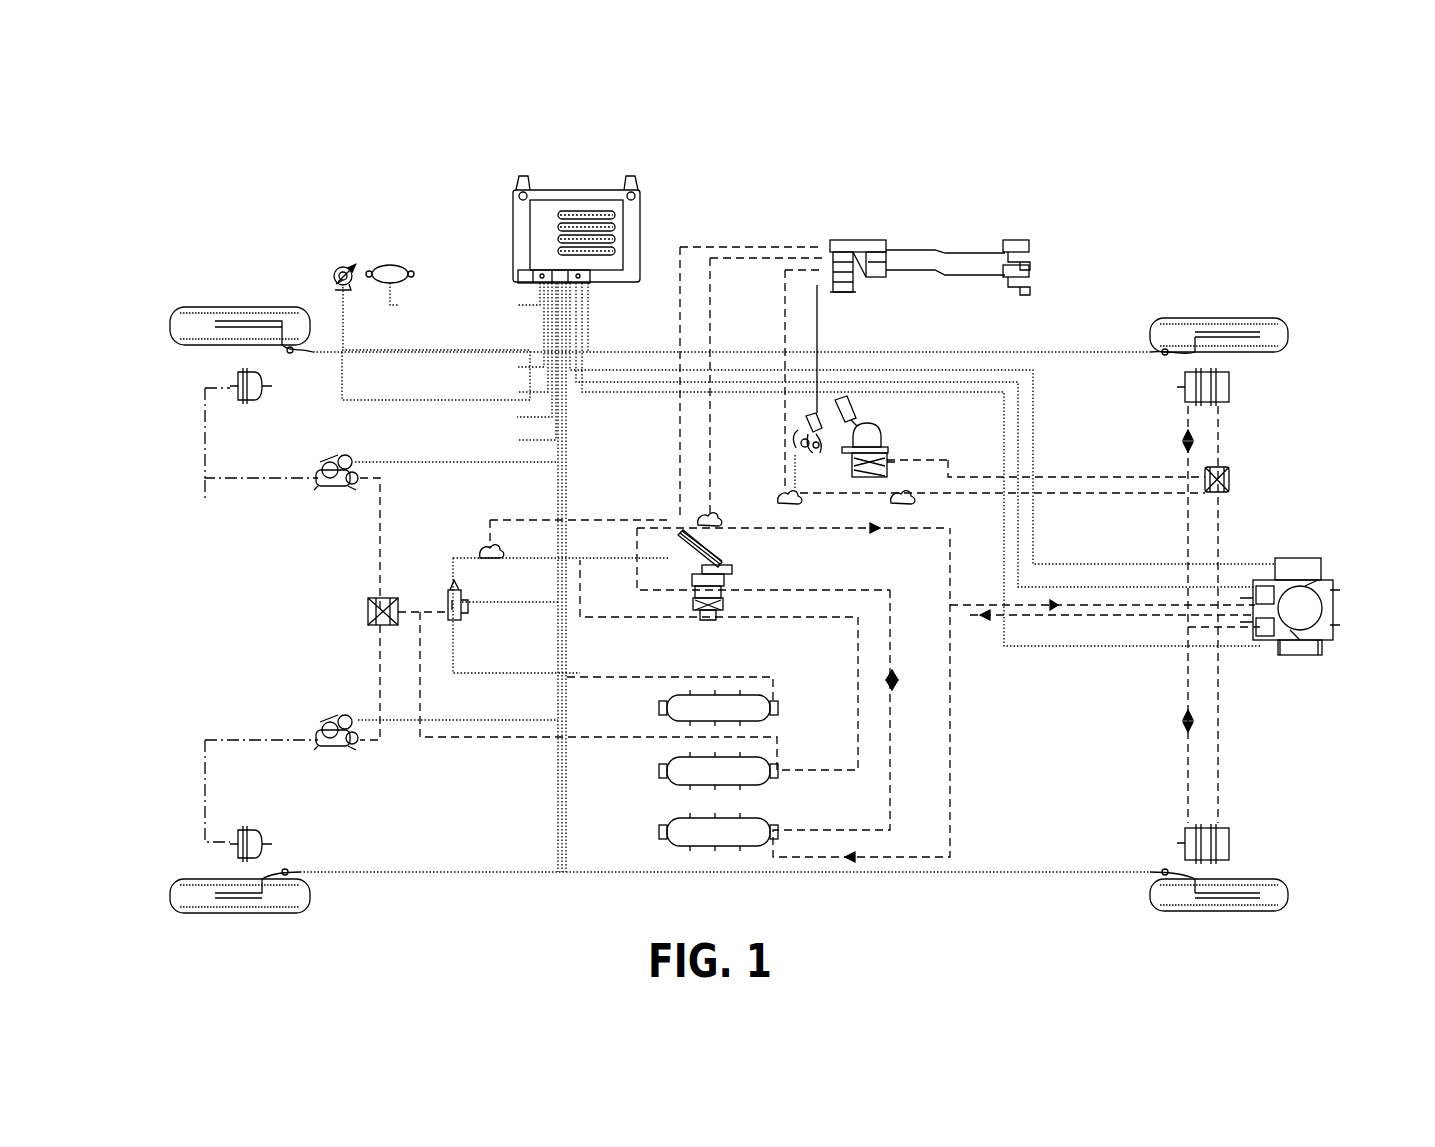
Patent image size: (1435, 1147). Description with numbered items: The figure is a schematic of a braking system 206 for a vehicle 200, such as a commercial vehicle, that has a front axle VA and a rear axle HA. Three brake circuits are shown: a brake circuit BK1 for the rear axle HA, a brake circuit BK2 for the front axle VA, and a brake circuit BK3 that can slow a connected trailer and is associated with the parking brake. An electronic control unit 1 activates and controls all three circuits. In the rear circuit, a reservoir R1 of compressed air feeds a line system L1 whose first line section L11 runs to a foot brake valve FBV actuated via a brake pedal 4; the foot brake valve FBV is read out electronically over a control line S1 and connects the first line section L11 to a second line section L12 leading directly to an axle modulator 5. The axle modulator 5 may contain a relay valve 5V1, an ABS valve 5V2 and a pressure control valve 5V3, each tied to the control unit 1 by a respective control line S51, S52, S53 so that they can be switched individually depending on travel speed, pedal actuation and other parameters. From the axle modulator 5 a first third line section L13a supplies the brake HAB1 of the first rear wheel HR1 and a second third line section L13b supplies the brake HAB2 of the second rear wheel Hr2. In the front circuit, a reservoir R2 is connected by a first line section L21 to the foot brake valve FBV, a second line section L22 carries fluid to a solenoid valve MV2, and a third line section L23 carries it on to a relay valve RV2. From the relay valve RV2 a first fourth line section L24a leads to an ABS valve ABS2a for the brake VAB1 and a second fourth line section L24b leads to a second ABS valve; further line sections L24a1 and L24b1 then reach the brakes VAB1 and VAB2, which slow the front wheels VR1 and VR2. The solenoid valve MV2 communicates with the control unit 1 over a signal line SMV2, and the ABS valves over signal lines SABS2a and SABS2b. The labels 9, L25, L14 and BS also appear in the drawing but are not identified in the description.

The vehicle 200 is at (242, 168).
The braking system 206 is at (768, 162).
The electronic control unit 1 is at (573, 196).
The connector / interface 9 is at (432, 359).
The brake pedal 4 is at (720, 555).
The axle modulator 5 is at (1305, 556).
The front axle VA is at (241, 282).
The first front wheel VR1 is at (190, 315).
The second front wheel VR2 is at (178, 890).
The front axle brake VAB1 is at (226, 386).
The front axle brake VAB2 is at (226, 848).
The ABS valve ABS2a is at (336, 460).
The signal line SABS2a is at (393, 462).
The signal line SABS2b is at (505, 722).
The further line section L24a1 is at (212, 485).
The first fourth line section L24a is at (378, 508).
The second fourth line section L24b is at (380, 666).
The further line section L24b1 is at (213, 740).
The relay valve RV2 is at (368, 612).
The third line section L23 is at (428, 612).
The solenoid valve MV2 is at (462, 612).
The signal line SMV2 is at (561, 596).
The control line S1 is at (600, 562).
The foot brake valve FBV is at (688, 565).
The second line section L22 is at (630, 618).
The second line section L12 is at (668, 592).
The pneumatic line L25 is at (590, 736).
The first line section L21 is at (800, 772).
The first line section L11 is at (808, 832).
The pneumatic line L14 is at (912, 860).
The line system L1 is at (832, 588).
The reservoir R1 is at (664, 832).
The reservoir R2 is at (664, 768).
The brake circuit BK1 is at (1025, 682).
The brake circuit BK2 is at (505, 782).
The brake circuit BK3 is at (862, 342).
The rear axle HA is at (1222, 272).
The brake system BS is at (1290, 257).
The first rear wheel HR1 is at (1290, 330).
The second rear wheel Hr2 is at (1290, 893).
The rear axle brake HAB1 is at (1228, 388).
The rear axle brake HAB2 is at (1230, 845).
The first third line section L13a is at (1190, 505).
The second third line section L13b is at (1190, 770).
The control line S52 is at (1055, 585).
The control line S51 is at (1075, 565).
The control line S53 is at (1105, 648).
The relay valve 5V1 is at (1315, 575).
The ABS valve 5V2 is at (1305, 650).
The pressure control valve 5V3 is at (1262, 645).